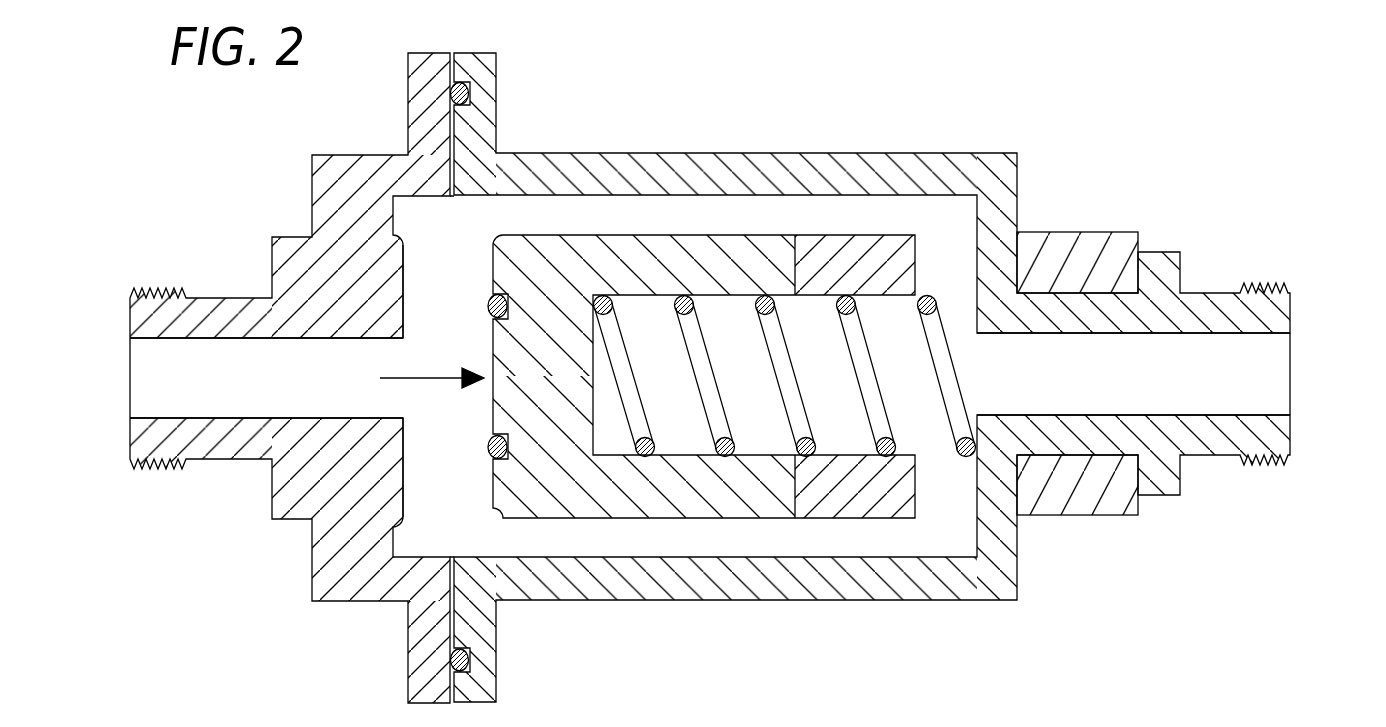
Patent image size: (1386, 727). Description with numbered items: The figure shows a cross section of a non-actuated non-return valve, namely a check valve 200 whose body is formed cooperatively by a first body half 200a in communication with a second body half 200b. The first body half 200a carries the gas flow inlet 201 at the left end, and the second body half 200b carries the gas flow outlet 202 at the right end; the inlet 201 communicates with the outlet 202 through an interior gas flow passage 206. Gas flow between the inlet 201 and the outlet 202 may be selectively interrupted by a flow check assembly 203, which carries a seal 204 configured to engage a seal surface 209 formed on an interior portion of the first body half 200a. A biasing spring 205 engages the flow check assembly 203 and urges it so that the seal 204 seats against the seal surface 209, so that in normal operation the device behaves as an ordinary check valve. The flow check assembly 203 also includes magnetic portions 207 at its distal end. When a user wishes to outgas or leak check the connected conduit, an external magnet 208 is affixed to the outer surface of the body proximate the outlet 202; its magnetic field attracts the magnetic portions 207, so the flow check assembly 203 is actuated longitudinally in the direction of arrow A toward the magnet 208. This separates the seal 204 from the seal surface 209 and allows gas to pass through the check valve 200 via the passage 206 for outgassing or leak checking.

The check valve 200 is at (723, 143).
The first body half 200a is at (380, 157).
The second body half 200b is at (549, 157).
The gas flow inlet 201 is at (200, 376).
The gas flow outlet 202 is at (1225, 373).
The flow check assembly 203 is at (678, 377).
The seal 204 is at (490, 305).
The biasing spring 205 is at (929, 296).
The interior gas flow passage 206 is at (798, 222).
The magnetic portions 207 is at (863, 250).
The external magnet 208 is at (1073, 252).
The seal surface 209 is at (404, 262).